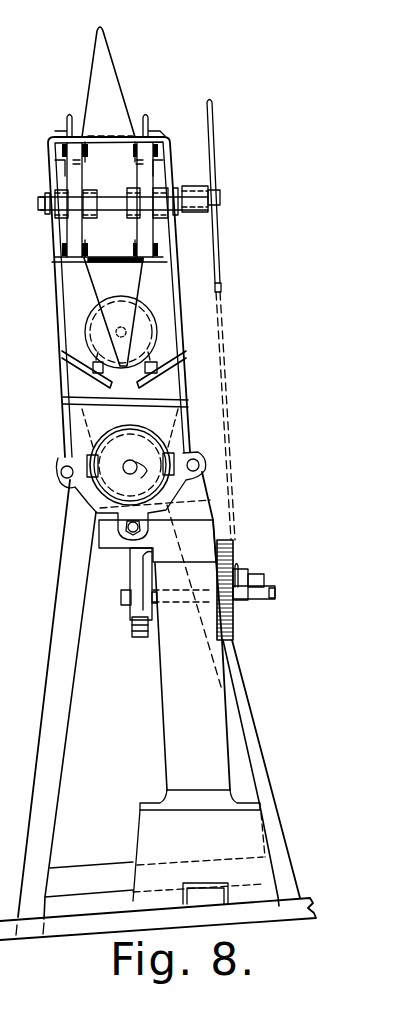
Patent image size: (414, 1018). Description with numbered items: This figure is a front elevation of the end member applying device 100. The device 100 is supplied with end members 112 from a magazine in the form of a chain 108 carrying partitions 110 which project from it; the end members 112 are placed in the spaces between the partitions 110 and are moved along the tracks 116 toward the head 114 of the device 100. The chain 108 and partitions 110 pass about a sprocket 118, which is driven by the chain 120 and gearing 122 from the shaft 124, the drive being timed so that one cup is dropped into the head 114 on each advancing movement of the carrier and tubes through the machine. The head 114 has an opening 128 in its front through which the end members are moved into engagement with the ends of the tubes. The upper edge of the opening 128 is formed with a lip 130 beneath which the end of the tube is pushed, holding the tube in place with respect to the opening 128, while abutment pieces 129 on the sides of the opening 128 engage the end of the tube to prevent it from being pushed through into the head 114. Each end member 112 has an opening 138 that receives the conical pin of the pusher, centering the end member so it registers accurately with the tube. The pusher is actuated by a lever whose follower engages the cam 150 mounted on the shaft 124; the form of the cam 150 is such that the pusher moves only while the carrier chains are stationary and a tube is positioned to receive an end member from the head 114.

The end member applying device 100 is at (57, 78).
The chain 108 is at (150, 135).
The partitions 110 is at (106, 65).
The end members 112 is at (143, 321).
The head 114 is at (90, 423).
The tracks 116 is at (66, 356).
The sprocket 118 is at (78, 181).
The chain 120 is at (222, 380).
The gearing 122 is at (233, 551).
The shaft 124 is at (257, 595).
The opening 128 is at (108, 478).
The abutment pieces 129 is at (99, 467).
The lip 130 is at (132, 429).
The opening 138 is at (128, 318).
The cam 150 is at (143, 575).